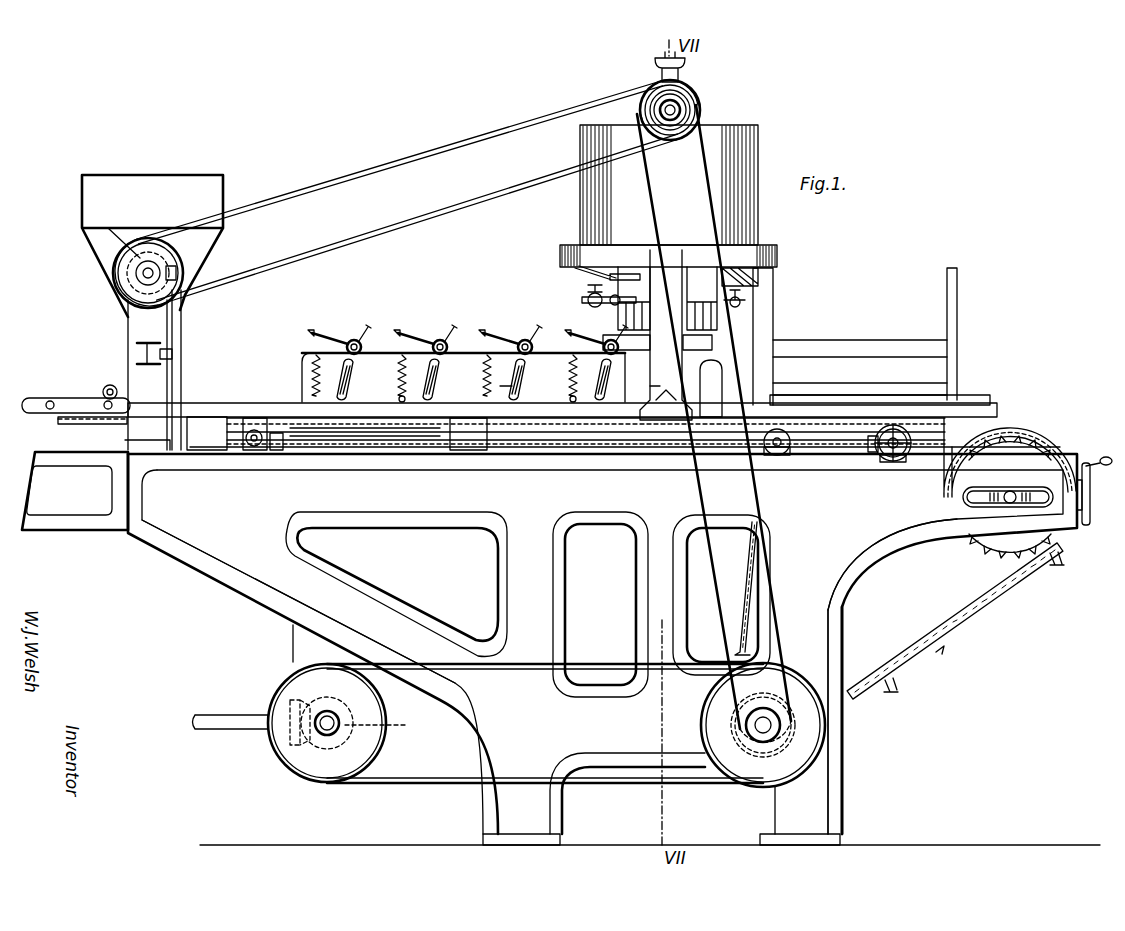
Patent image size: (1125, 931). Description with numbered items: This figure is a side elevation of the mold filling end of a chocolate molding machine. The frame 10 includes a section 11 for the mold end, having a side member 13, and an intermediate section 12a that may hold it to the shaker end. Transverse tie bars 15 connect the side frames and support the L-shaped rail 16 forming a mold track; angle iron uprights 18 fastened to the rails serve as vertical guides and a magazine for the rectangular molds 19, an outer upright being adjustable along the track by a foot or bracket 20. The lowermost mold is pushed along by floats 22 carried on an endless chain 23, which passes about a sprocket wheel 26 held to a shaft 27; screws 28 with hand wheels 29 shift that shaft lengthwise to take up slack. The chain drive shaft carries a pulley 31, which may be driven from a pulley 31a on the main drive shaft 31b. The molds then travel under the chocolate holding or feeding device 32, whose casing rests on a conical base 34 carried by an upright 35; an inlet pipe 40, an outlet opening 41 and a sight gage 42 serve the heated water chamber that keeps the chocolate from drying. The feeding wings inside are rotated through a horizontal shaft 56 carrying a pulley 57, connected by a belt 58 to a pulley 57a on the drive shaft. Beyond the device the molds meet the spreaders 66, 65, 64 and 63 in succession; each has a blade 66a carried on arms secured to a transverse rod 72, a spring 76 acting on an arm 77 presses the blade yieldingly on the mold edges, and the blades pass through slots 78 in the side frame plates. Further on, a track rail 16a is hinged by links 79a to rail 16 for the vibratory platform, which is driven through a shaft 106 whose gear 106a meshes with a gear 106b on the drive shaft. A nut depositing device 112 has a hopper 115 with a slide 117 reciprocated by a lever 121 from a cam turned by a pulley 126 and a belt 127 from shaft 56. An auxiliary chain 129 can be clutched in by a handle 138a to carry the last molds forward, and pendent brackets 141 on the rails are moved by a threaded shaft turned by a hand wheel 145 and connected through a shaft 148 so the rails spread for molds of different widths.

The frame 10 is at (602, 649).
The frame section 11 is at (851, 720).
The intermediate section 12a is at (82, 527).
The side member 13 is at (197, 550).
The transverse tie bars 15 is at (208, 417).
The L-shaped rail 16 is at (258, 403).
The track member or rail 16a is at (38, 398).
The angle iron uprights 18 is at (775, 333).
The rectangular molds 19 is at (849, 350).
The foot or bracket 20 is at (978, 397).
The floats or engaging members 22 is at (973, 630).
The endless chain or carrier 23 is at (978, 597).
The sprocket wheel 26 is at (992, 548).
The shaft 27 is at (1013, 492).
The screws 28 is at (963, 495).
The hand wheels 29 is at (1088, 463).
The pulley 31 is at (816, 746).
The pulley 31a is at (340, 770).
The main drive shaft 31b is at (325, 734).
The chocolate holding or feeding device 32 is at (672, 237).
The base 34 is at (758, 280).
The standard or upright 35 is at (650, 372).
The inlet pipe 40 is at (580, 297).
The outlet opening 41 is at (574, 270).
The sight gage 42 is at (742, 303).
The shaft 56 is at (684, 108).
The pulley 57 is at (700, 112).
The pulley 57a is at (828, 731).
The belt 58 is at (760, 512).
The spreader or distributer 63 is at (343, 334).
The spreader or distributer 64 is at (425, 354).
The spreader or distributer 65 is at (510, 351).
The spreader or distributer 66 is at (596, 330).
The blade 66a is at (338, 370).
The rod or shaft 72 is at (368, 330).
The springs 76 is at (570, 390).
The rod or arm 77 is at (312, 334).
The slots or openings 78 is at (500, 388).
The links 79a is at (104, 392).
The shaft 106 is at (236, 713).
The gear 106a is at (292, 757).
The gear 106b is at (399, 732).
The nut depositing device 112 is at (223, 175).
The hopper or receptacle 115 is at (152, 246).
The slide 117 is at (146, 366).
The lever 121 is at (183, 325).
The pulley 126 is at (184, 270).
The belt 127 is at (438, 148).
The auxiliary sprocket chain 129 is at (366, 420).
The handle 138a is at (786, 457).
The pendent brackets 141 is at (912, 440).
The hand wheel 145 is at (898, 463).
The shaft 148 is at (310, 438).